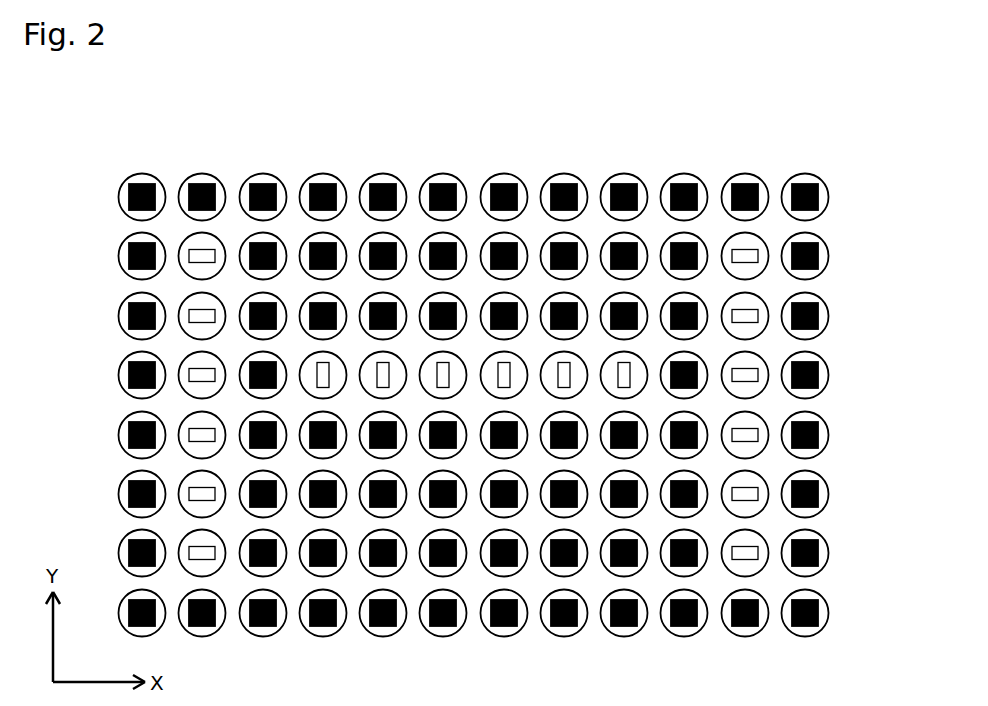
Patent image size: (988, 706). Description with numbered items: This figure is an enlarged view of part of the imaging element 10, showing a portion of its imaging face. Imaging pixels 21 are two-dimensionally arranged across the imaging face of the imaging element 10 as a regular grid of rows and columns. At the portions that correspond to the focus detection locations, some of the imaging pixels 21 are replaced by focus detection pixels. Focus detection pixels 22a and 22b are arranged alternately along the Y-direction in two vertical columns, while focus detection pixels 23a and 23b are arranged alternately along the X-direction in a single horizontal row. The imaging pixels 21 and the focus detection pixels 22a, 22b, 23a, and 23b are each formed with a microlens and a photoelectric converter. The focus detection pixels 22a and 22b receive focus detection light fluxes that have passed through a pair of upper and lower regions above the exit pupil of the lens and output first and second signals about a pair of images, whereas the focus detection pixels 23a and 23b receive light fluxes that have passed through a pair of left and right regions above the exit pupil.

The imaging element 10 is at (830, 132).
The imaging pixel 21 is at (152, 174).
The focus detection pixel 22a is at (183, 240).
The focus detection pixel 22b is at (183, 299).
The focus detection pixel 23a is at (335, 351).
The focus detection pixel 23b is at (395, 351).